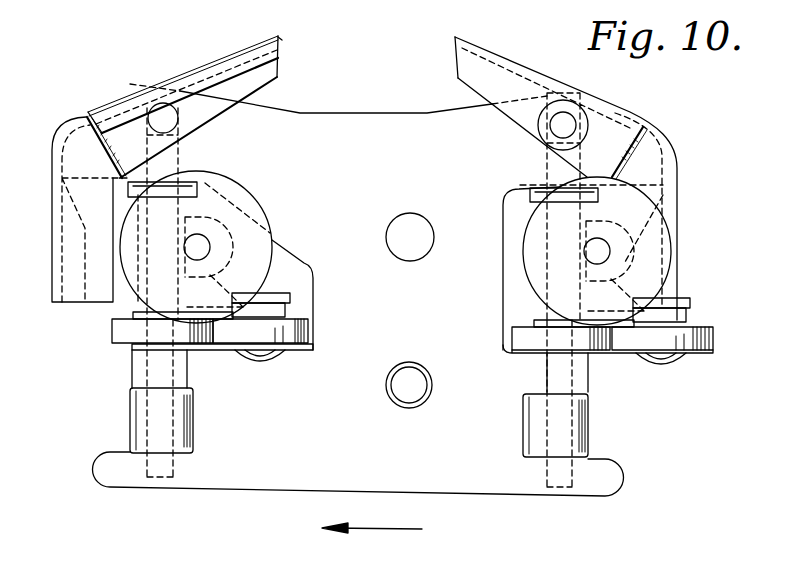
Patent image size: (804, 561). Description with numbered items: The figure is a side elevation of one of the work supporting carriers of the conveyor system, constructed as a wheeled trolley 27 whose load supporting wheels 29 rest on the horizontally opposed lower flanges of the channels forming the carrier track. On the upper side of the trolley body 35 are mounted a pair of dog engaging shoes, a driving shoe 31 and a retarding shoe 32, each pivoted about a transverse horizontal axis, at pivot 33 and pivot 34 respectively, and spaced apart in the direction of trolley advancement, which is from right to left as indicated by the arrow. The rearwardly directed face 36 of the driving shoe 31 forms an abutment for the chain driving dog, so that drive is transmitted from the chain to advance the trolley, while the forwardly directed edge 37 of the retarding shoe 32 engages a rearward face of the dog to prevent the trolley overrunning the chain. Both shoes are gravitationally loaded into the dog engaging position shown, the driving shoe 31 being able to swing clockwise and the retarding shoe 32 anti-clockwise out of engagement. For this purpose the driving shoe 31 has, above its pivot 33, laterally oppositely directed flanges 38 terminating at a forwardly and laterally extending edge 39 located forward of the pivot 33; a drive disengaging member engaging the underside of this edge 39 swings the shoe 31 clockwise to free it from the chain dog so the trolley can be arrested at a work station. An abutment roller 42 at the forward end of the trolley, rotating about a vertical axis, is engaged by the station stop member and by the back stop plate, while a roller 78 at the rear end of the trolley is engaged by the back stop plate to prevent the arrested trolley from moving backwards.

The wheeled trolley 27 is at (593, 372).
The load supporting wheel 29 is at (243, 201).
The driving shoe 31 is at (239, 44).
The retarding shoe 32 is at (525, 53).
The pivot 33 is at (158, 105).
The pivot 34 is at (565, 125).
The trolley body 35 is at (450, 478).
The rearwardly directed face 36 is at (278, 42).
The forwardly directed edge 37 is at (450, 46).
The laterally oppositely directed flanges 38 is at (193, 63).
The forwardly and laterally extending edge 39 is at (84, 114).
The abutment roller 42 is at (133, 408).
The roller 78 is at (575, 430).